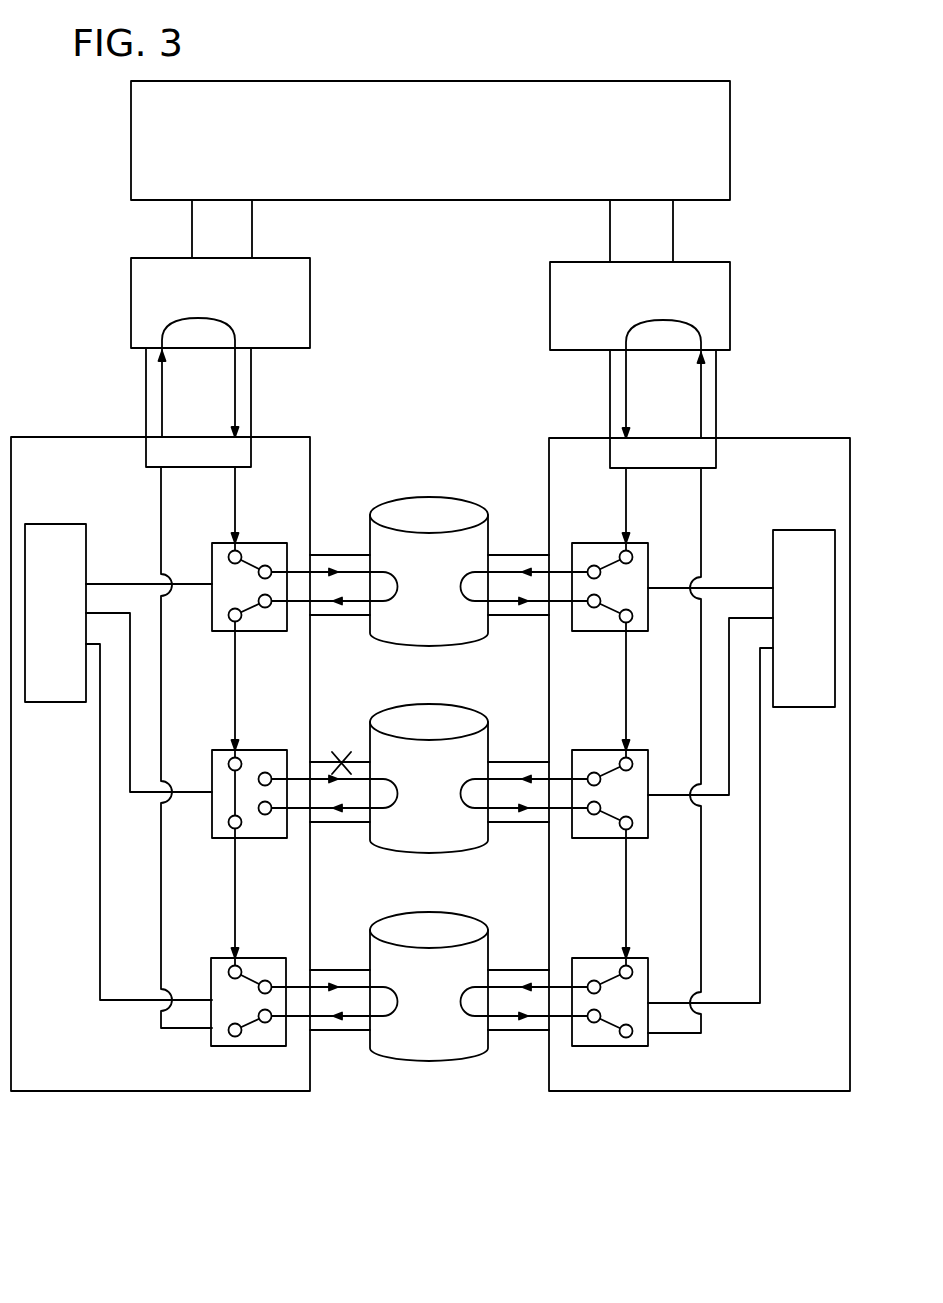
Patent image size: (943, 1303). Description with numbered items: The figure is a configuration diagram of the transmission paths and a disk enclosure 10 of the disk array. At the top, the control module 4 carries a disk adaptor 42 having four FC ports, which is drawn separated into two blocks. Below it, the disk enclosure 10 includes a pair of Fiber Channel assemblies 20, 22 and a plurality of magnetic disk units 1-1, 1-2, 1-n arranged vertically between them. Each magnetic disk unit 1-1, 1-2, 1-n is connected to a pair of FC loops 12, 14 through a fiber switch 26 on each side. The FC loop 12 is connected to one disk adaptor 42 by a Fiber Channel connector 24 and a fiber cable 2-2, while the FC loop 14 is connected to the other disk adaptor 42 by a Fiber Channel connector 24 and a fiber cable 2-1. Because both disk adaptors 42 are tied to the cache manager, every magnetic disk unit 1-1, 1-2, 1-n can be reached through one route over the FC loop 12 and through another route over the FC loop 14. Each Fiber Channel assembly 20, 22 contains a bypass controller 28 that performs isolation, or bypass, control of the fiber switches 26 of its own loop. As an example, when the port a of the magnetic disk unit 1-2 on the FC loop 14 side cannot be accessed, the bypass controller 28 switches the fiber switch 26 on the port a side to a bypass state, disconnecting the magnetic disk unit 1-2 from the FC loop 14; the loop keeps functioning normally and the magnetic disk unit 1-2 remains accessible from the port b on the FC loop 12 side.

The control module 4 is at (730, 125).
The disk adaptor 42 is at (131, 300).
The fiber cable 2-1 is at (146, 394).
The fiber cable 2-2 is at (610, 382).
The disk enclosure 10 is at (440, 741).
The Fiber Channel assembly 22 is at (282, 437).
The Fiber Channel assembly 20 is at (572, 438).
The Fiber Channel connector 24 is at (240, 452).
The bypass controller 28 is at (62, 700).
The fiber switch 26 is at (287, 622).
The magnetic disk unit 1-1 is at (440, 497).
The magnetic disk unit 1-2 is at (440, 704).
The magnetic disk unit 1-n is at (440, 912).
The FC loop 14 is at (155, 1025).
The FC loop 12 is at (700, 1027).
The port a is at (341, 756).
The port b is at (517, 752).